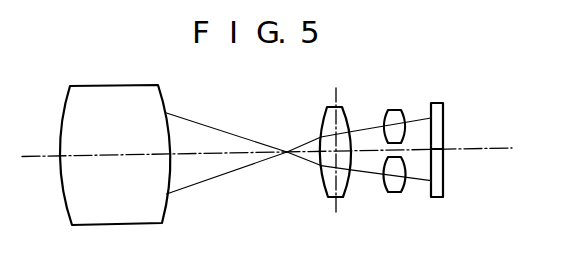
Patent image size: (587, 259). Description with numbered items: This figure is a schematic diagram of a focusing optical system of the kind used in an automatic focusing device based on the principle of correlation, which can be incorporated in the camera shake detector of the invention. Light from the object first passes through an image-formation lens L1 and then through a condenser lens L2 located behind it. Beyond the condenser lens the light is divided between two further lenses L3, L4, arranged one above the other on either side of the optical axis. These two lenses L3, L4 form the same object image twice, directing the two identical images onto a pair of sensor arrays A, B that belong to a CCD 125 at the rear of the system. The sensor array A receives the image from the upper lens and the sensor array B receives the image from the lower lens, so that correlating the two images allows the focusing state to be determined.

The image-formation lens L1 is at (73, 98).
The condenser lens L2 is at (327, 117).
The lens for forming object image L3 is at (392, 113).
The lens for forming object image L4 is at (392, 189).
The CCD 125 is at (456, 131).
The sensor array A is at (450, 132).
The sensor array B is at (450, 165).